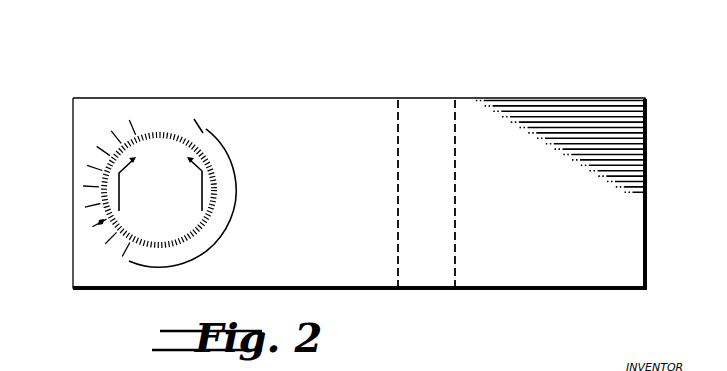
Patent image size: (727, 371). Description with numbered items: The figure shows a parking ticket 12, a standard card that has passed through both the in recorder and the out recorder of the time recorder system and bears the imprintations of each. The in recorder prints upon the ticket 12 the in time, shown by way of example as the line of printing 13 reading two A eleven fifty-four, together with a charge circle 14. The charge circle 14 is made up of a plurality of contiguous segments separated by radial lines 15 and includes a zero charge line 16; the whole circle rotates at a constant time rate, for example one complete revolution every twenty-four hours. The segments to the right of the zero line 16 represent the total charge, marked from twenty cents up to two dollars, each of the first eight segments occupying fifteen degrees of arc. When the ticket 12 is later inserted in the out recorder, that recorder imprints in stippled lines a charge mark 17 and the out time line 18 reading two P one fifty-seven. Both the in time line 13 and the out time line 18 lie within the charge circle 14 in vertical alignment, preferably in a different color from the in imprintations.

The parking ticket 12 is at (308, 112).
The in time line 13 is at (176, 147).
The charge circle 14 is at (127, 145).
The radial lines 15 is at (108, 250).
The zero charge line 16 is at (128, 262).
The charge mark 17 is at (98, 222).
The out time line 18 is at (148, 152).